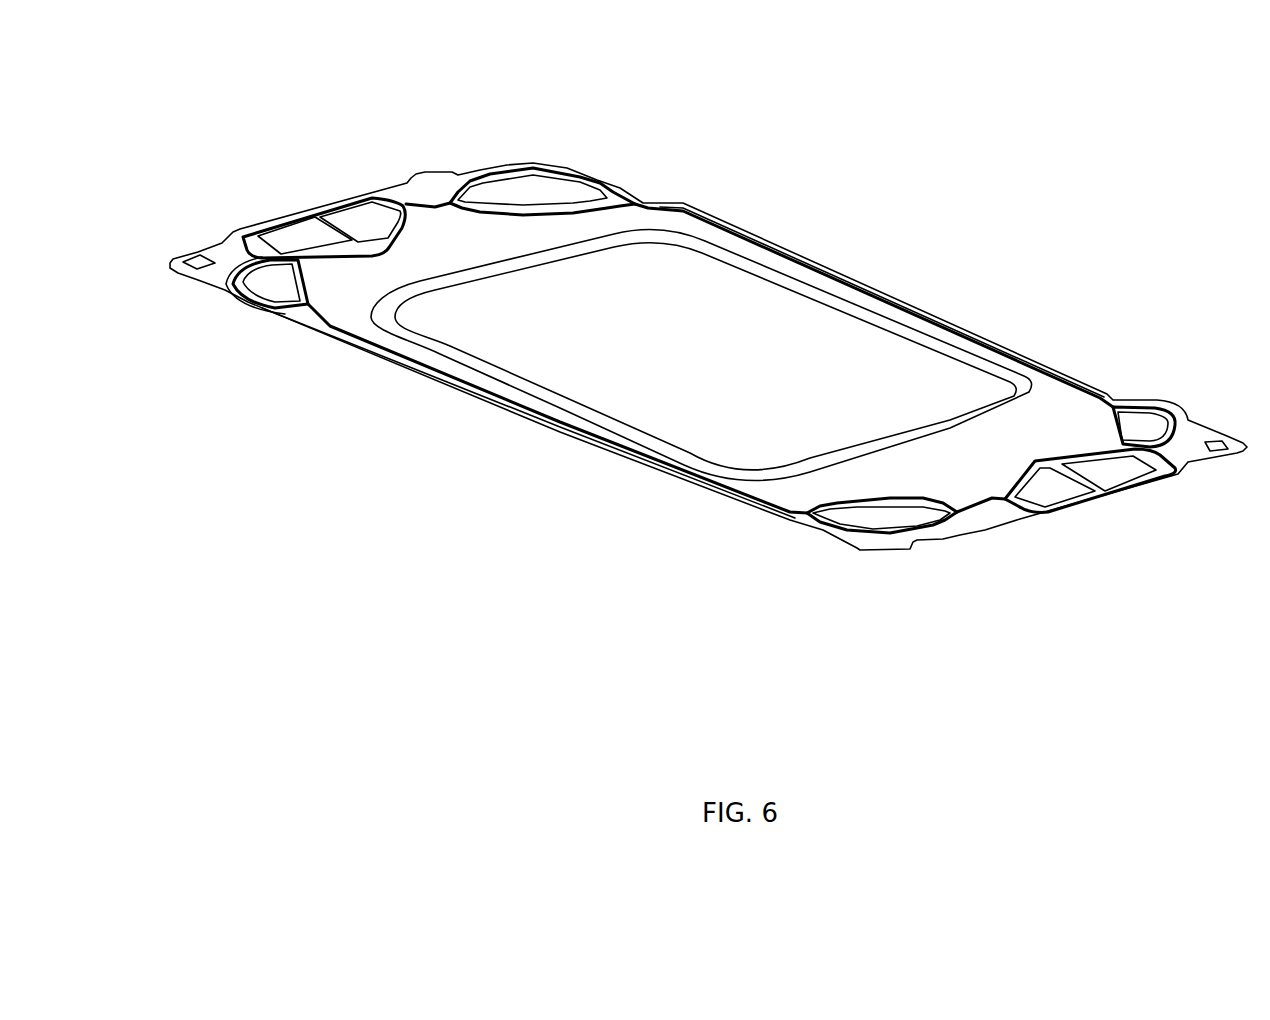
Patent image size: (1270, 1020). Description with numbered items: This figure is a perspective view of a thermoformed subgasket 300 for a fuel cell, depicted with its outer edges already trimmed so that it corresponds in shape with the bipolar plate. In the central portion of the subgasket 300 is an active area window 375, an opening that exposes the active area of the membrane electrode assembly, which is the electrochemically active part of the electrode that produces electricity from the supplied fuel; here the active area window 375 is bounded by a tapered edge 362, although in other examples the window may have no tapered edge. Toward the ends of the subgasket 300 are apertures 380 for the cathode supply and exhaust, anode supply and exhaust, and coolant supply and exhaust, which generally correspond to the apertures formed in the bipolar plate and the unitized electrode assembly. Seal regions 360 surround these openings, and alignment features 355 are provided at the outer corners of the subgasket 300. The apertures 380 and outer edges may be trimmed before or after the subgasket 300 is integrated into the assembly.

The subgasket 300 is at (1072, 126).
The alignment features 355 is at (193, 270).
The seal regions 360 is at (413, 230).
The tapered edge 362 is at (1022, 383).
The active area window 375 is at (743, 348).
The apertures 380 is at (900, 518).